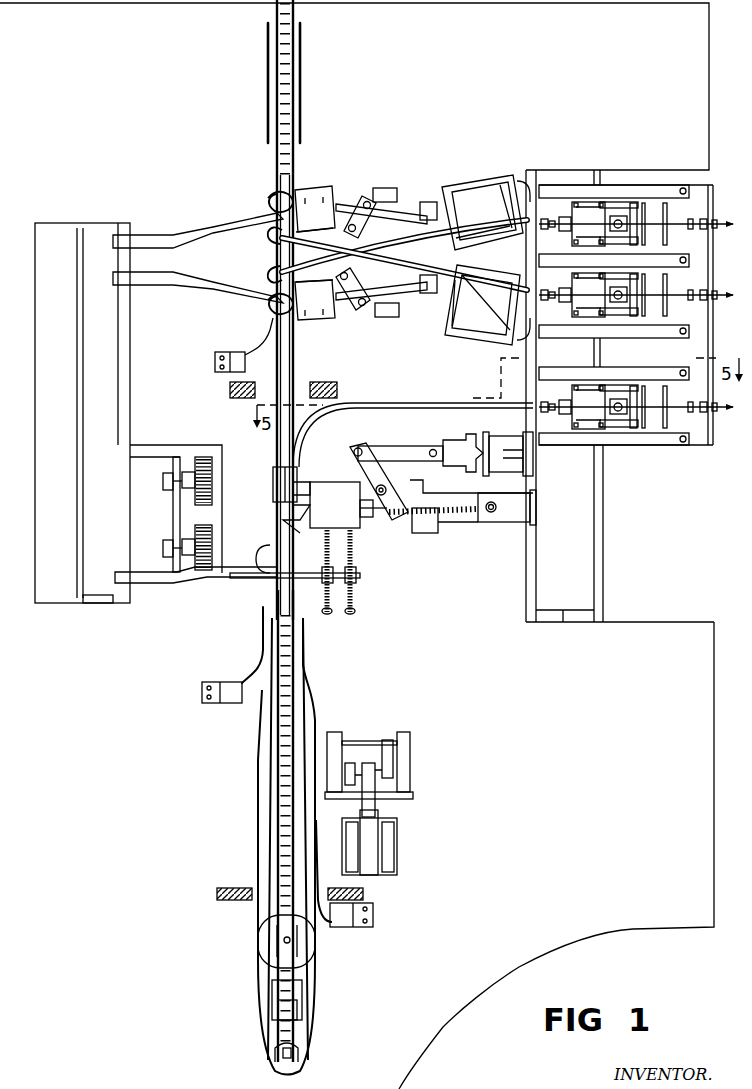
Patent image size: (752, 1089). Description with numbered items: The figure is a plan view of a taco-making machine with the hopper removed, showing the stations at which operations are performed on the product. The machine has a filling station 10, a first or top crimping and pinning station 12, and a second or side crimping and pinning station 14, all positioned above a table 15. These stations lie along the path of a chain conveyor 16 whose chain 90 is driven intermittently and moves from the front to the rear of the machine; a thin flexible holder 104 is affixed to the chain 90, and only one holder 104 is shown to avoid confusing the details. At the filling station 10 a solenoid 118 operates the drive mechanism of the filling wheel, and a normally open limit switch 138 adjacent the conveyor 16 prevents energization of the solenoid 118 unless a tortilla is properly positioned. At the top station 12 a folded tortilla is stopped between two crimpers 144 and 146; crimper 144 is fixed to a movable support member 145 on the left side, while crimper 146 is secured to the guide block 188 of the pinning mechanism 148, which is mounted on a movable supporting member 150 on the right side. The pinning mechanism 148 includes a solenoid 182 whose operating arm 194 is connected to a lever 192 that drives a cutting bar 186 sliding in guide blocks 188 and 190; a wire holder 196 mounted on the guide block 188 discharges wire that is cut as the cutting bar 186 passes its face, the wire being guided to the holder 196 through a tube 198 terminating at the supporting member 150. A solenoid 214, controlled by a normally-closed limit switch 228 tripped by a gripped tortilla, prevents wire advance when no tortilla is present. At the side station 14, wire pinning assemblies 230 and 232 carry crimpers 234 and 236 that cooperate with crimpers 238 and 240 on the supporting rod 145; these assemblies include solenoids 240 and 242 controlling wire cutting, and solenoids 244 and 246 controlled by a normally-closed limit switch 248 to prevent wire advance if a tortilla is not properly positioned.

The filling station 10 is at (445, 785).
The first or top crimping and pinning station 12 is at (250, 456).
The second or side crimping and pinning station 14 is at (225, 185).
The table 15 is at (623, 765).
The chain conveyor 16 is at (344, 1008).
The chain 90 is at (280, 808).
The holder 104 is at (262, 942).
The solenoid 118 is at (398, 846).
The limit switch 138 is at (343, 928).
The crimper 144 is at (244, 580).
The movable support member 145 is at (90, 424).
The crimper 146 is at (311, 586).
The pinning mechanism 148 is at (478, 548).
The movable supporting member 150 is at (595, 548).
The solenoid 182 is at (500, 436).
The cutting bar 186 is at (386, 516).
The guide block 188 is at (357, 526).
The guide block 190 is at (431, 534).
The lever 192 is at (350, 460).
The operating arm 194 is at (396, 446).
The wire holder 196 is at (272, 490).
The tube 198 is at (436, 404).
The solenoid 214 is at (596, 416).
The limit switch 228 is at (231, 703).
The wire pinning assembly 230 is at (387, 325).
The wire pinning assembly 232 is at (408, 156).
The crimper 234 is at (311, 321).
The crimper 236 is at (321, 189).
The crimper 238 is at (162, 288).
The crimper / solenoid 240 is at (161, 234).
The solenoid 242 is at (478, 330).
The solenoid 244 is at (592, 212).
The solenoid 246 is at (592, 306).
The limit switch 248 is at (255, 345).